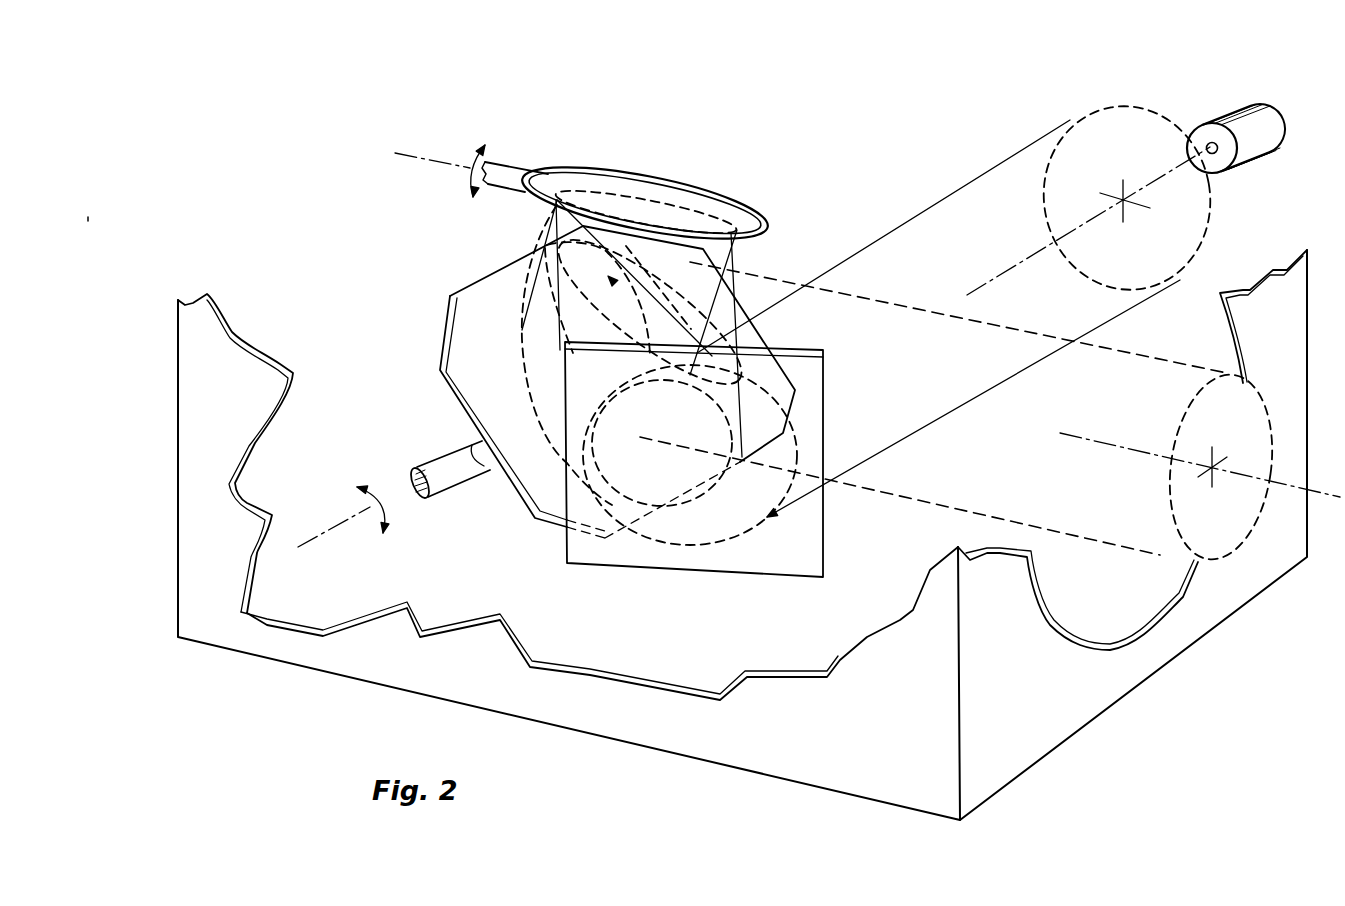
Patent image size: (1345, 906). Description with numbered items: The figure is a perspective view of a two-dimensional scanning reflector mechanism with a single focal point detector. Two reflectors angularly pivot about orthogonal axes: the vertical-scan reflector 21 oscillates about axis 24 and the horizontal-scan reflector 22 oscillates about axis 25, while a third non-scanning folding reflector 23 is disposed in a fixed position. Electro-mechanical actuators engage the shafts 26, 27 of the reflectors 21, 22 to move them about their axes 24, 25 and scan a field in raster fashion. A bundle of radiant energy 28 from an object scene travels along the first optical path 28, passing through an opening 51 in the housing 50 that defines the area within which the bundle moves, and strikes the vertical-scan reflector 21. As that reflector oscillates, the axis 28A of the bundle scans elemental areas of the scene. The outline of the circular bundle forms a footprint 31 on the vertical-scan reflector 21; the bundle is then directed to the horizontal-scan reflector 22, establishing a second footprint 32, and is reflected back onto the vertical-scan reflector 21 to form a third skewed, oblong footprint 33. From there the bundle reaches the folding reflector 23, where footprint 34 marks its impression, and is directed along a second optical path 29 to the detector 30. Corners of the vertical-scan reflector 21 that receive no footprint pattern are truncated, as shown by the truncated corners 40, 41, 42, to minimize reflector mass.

The vertical-scan reflector 21 is at (513, 500).
The horizontal-scan reflector 22 is at (660, 187).
The fixed folding reflector 23 is at (627, 567).
The axis of vertical-scan reflector 24 is at (330, 533).
The axis of horizontal-scan reflector 25 is at (415, 157).
The shaft of reflector 21 26 is at (433, 455).
The shaft of reflector 22 27 is at (512, 163).
The bundle of radiant energy / first optical path 28 is at (1247, 540).
The axis of ray bundle 28A is at (1293, 487).
The second optical path 29 is at (1113, 92).
The detector 30 is at (1275, 87).
The footprint on reflector 21 31 is at (680, 300).
The footprint on reflector 22 32 is at (697, 210).
The skewed footprint on reflector 21 33 is at (527, 292).
The footprint on folding reflector 34 is at (727, 532).
The truncated corner of reflector 21 40 is at (800, 418).
The truncated corner of reflector 21 41 is at (550, 538).
The truncated corner of reflector 21 42 is at (435, 328).
The housing 50 is at (1060, 745).
The opening in housing 51 is at (1065, 642).